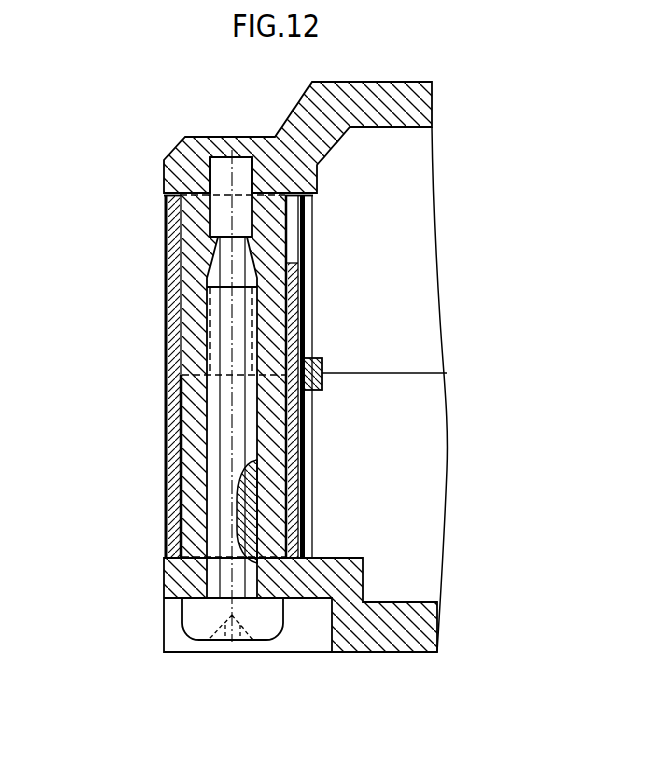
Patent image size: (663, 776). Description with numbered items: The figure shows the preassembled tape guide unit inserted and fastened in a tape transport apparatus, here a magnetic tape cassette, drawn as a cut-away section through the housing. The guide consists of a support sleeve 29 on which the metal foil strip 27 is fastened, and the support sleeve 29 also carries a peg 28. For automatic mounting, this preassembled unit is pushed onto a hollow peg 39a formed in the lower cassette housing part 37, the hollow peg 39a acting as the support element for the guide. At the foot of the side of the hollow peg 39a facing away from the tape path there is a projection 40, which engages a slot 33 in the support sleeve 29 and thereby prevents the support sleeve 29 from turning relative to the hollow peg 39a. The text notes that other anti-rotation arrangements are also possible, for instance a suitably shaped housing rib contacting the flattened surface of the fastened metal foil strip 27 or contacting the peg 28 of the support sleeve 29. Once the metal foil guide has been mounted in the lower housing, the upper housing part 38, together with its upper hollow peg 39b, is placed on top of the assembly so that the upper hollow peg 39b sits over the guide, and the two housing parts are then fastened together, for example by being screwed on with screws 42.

The metal foil strip 27 is at (165, 440).
The peg 28 is at (322, 362).
The support sleeve 29 is at (165, 385).
The slot 33 is at (296, 228).
The lower cassette housing part 37 is at (420, 506).
The upper housing part 38 is at (411, 254).
The hollow peg 39a is at (191, 494).
The upper hollow peg 39b is at (191, 311).
The projection 40 is at (305, 543).
The screws 42 is at (262, 628).